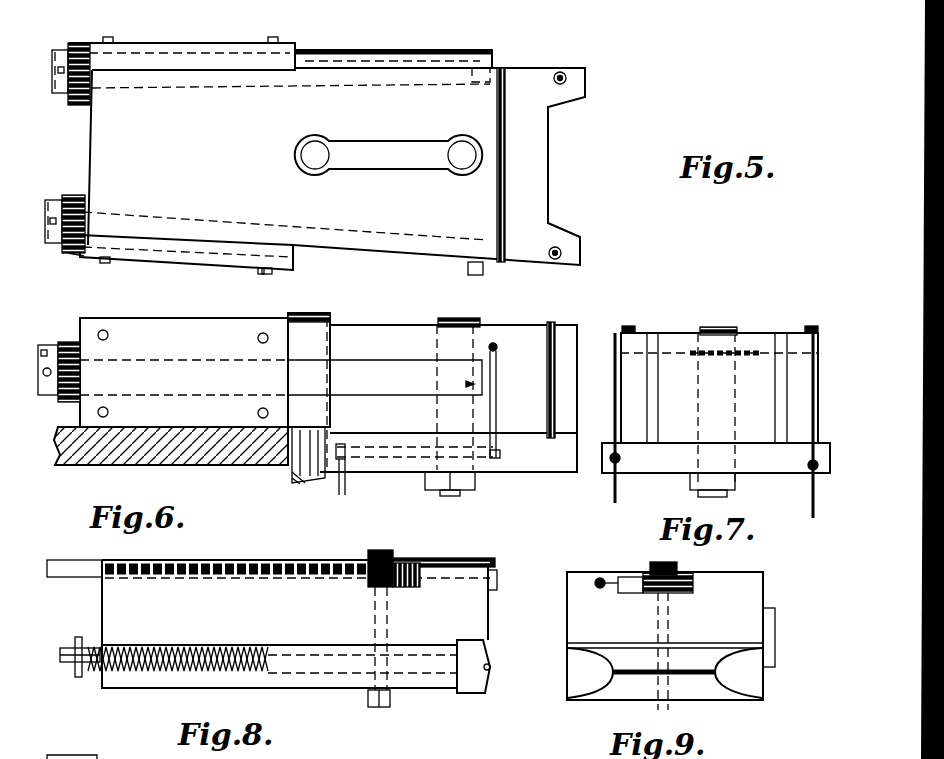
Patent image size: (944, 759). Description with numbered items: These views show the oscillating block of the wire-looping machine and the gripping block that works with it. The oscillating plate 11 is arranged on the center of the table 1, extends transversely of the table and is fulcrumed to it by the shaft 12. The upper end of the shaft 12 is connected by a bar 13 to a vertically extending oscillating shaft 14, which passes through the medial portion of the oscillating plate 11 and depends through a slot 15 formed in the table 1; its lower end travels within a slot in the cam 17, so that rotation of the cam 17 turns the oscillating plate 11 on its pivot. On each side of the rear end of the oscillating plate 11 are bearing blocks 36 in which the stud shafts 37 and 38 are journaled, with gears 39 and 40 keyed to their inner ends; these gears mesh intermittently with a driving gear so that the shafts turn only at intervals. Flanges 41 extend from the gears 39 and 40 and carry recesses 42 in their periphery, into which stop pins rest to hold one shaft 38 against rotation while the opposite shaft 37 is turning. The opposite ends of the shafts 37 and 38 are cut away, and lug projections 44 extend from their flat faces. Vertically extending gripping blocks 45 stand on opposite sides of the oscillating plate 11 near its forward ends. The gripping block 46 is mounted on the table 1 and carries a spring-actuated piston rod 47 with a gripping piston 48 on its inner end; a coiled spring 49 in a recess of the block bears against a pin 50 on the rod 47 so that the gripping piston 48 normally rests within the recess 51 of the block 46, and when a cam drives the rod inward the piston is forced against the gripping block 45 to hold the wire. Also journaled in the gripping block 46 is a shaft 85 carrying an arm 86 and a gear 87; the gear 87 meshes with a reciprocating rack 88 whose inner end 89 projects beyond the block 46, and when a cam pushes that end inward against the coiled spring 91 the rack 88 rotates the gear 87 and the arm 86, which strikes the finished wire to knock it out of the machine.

In FIG. 6, the table 1 is at (247, 455).
In FIG. 7, the table 1 is at (787, 465).
In FIG. 5, the oscillating plate 11 is at (306, 171).
In FIG. 5, the shaft 12 is at (455, 171).
In FIG. 6, the shaft 12 is at (452, 494).
In FIG. 7, the shaft 12 is at (689, 494).
In FIG. 5, the bar 13 is at (390, 145).
In FIG. 6, the bar 13 is at (378, 323).
In FIG. 7, the bar 13 is at (740, 336).
In FIG. 5, the oscillating shaft 14 is at (306, 154).
In FIG. 6, the oscillating shaft 14 is at (296, 482).
In FIG. 6, the slot 15 is at (292, 466).
In FIG. 6, the cam 17 is at (200, 325).
In FIG. 7, the cam 17 is at (671, 340).
In FIG. 5, the bearing blocks 36 is at (196, 50).
In FIG. 6, the bearing blocks 36 is at (143, 410).
In FIG. 5, the stud shaft 37 is at (371, 55).
In FIG. 5, the stud shaft 38 is at (260, 268).
In FIG. 6, the stud shaft 38 is at (381, 372).
In FIG. 5, the gear 39 is at (76, 43).
In FIG. 5, the gear 40 is at (68, 256).
In FIG. 6, the gear 40 is at (70, 343).
In FIG. 5, the flanges 41 is at (62, 94).
In FIG. 6, the flanges 41 is at (40, 345).
In FIG. 5, the recesses 42 is at (54, 245).
In FIG. 6, the recesses 42 is at (47, 380).
In FIG. 5, the lug projections 44 is at (503, 70).
In FIG. 6, the lug projections 44 is at (468, 383).
In FIG. 5, the gripping blocks 45 is at (563, 84).
In FIG. 6, the gripping blocks 45 is at (549, 392).
In FIG. 7, the gripping blocks 45 is at (618, 427).
In FIG. 8, the gripping block 46 is at (325, 625).
In FIG. 9, the gripping block 46 is at (580, 607).
In FIG. 8, the piston rod 47 is at (63, 666).
In FIG. 8, the gripping piston 48 is at (478, 680).
In FIG. 9, the gripping piston 48 is at (625, 687).
In FIG. 8, the coiled spring 49 is at (93, 674).
In FIG. 8, the pin 50 is at (80, 637).
In FIG. 8, the recess 51 is at (477, 640).
In FIG. 8, the shaft 85 is at (378, 708).
In FIG. 9, the shaft 85 is at (670, 624).
In FIG. 8, the arm 86 is at (461, 555).
In FIG. 9, the arm 86 is at (648, 563).
In FIG. 8, the gear 87 is at (398, 588).
In FIG. 9, the gear 87 is at (647, 594).
In FIG. 8, the reciprocating rack 88 is at (70, 564).
In FIG. 9, the reciprocating rack 88 is at (620, 586).
In FIG. 8, the projecting end of rack 89 is at (47, 577).
In FIG. 8, the coiled spring 91 is at (240, 564).
In FIG. 9, the coiled spring 91 is at (594, 584).